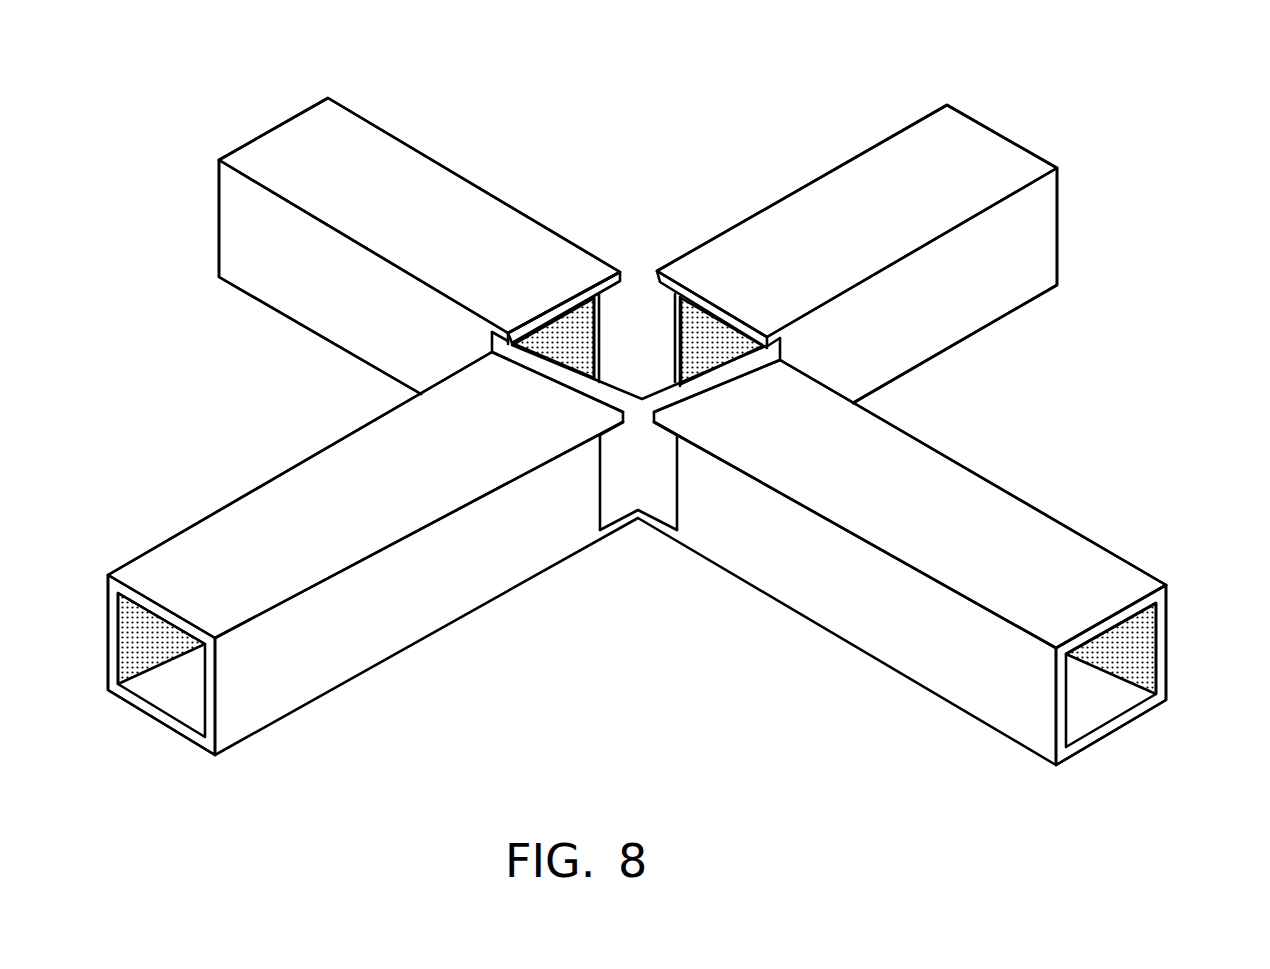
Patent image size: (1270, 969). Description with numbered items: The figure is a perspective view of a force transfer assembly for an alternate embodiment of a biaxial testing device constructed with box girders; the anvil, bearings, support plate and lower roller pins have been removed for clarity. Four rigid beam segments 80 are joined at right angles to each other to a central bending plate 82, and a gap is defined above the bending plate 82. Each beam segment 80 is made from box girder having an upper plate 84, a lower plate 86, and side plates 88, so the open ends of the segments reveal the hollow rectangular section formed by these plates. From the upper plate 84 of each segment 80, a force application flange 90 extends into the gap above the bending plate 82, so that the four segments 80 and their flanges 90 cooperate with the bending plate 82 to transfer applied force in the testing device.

The rigid beam segment 80 is at (372, 122).
The bending plate 82 is at (650, 492).
The upper plate 84 is at (383, 163).
The lower plate 86 is at (173, 728).
The side plate 88 is at (322, 292).
The force application flange 90 is at (678, 272).